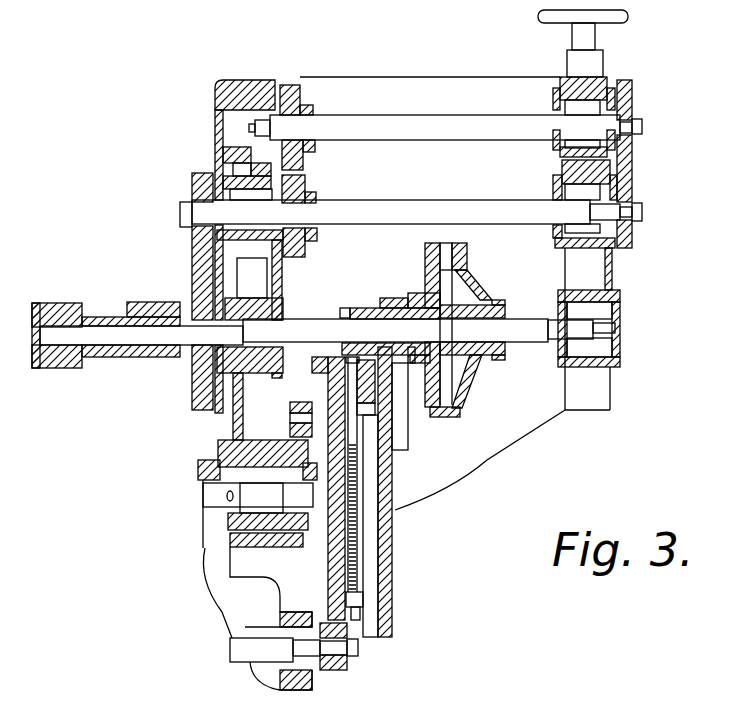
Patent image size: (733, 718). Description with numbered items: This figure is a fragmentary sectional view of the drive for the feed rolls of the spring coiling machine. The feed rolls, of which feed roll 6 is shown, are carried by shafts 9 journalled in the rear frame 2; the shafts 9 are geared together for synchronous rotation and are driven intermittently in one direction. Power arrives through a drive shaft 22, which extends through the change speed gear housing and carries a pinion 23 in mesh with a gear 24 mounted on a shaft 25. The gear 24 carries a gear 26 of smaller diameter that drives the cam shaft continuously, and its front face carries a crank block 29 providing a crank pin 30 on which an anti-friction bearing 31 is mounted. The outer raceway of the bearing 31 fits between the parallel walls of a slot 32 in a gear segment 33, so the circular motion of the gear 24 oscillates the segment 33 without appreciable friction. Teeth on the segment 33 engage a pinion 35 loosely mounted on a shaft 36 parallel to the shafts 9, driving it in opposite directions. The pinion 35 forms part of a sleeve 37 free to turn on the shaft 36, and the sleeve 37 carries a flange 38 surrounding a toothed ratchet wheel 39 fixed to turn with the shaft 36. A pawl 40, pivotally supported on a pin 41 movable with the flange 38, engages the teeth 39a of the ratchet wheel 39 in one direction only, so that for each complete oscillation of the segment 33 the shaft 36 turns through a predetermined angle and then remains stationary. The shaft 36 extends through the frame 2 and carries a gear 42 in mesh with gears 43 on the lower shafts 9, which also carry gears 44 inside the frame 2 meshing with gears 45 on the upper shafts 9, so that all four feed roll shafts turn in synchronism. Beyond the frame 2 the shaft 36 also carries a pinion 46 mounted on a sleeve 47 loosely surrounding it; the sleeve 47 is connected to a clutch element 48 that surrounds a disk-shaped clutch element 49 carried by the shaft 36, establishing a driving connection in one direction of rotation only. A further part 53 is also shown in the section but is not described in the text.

The frame 2 is at (240, 90).
The feed roll 6 is at (625, 83).
The shaft 9 is at (447, 117).
The drive shaft 22 is at (248, 662).
The pinion 23 is at (347, 668).
The gear 24 is at (360, 586).
The shaft 25 is at (240, 493).
The gear 26 is at (290, 410).
The crank block 29 is at (363, 467).
The crank pin 30 is at (372, 383).
The anti-friction bearing 31 is at (386, 437).
The slot 32 is at (377, 558).
The gear segment 33 is at (394, 528).
The pinion 35 is at (395, 298).
The shaft 36 is at (307, 327).
The sleeve 37 is at (415, 293).
The flange 38 is at (453, 417).
The ratchet wheel 39 is at (455, 292).
The teeth 39a is at (465, 391).
The pawl 40 is at (463, 280).
The pin 41 is at (445, 247).
The gear 42 is at (193, 261).
The gear 43 is at (191, 188).
The gear 44 is at (307, 191).
The gear 45 is at (302, 87).
The pinion 46 is at (150, 358).
The sleeve 47 is at (98, 316).
The clutch element 48 is at (55, 302).
The clutch element 49 is at (62, 368).
The collar 53 is at (150, 302).